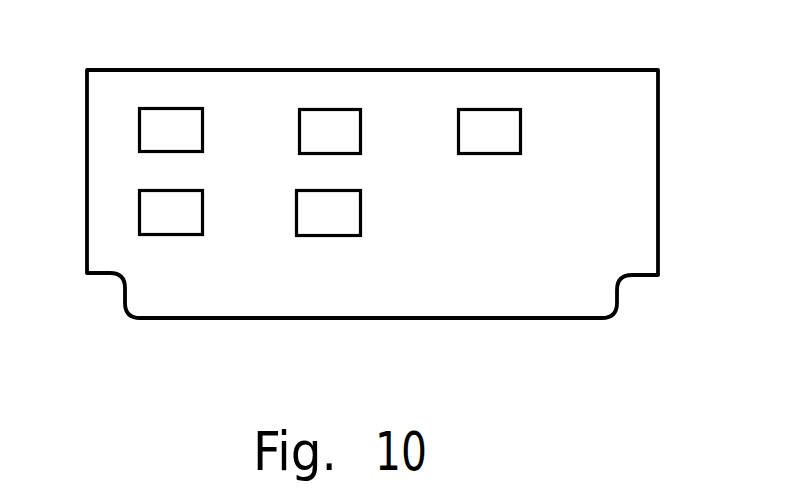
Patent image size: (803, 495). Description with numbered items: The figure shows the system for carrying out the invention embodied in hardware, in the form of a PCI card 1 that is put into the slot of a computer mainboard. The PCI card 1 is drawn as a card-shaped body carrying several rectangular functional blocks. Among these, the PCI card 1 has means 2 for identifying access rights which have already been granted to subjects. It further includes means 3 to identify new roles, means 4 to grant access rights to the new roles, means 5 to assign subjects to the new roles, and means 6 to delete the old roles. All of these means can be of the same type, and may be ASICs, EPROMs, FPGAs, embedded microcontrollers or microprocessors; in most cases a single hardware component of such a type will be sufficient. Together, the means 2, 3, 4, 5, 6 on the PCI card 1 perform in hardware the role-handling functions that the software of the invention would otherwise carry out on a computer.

The PCI card 1 is at (658, 165).
The means for identifying access rights 2 is at (138, 134).
The means to identify new roles 3 is at (138, 216).
The means to grant access rights to the new roles 4 is at (328, 237).
The means to assign subjects to the new roles 5 is at (336, 108).
The means to delete the old roles 6 is at (491, 108).